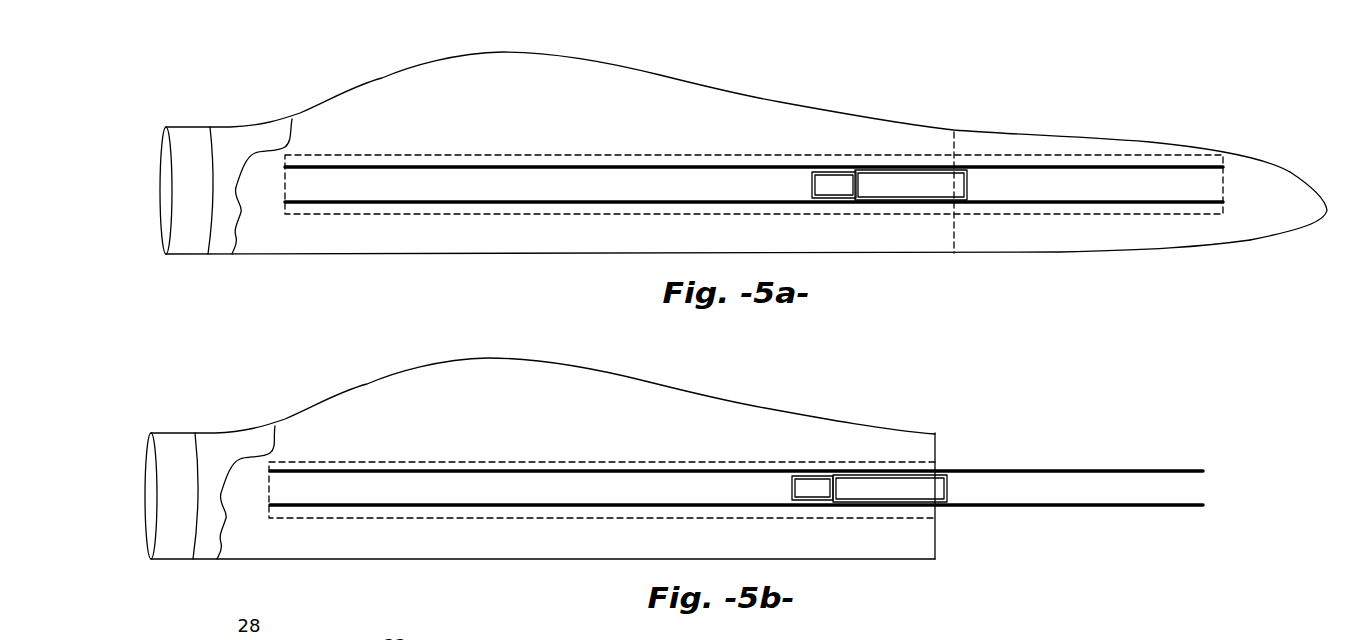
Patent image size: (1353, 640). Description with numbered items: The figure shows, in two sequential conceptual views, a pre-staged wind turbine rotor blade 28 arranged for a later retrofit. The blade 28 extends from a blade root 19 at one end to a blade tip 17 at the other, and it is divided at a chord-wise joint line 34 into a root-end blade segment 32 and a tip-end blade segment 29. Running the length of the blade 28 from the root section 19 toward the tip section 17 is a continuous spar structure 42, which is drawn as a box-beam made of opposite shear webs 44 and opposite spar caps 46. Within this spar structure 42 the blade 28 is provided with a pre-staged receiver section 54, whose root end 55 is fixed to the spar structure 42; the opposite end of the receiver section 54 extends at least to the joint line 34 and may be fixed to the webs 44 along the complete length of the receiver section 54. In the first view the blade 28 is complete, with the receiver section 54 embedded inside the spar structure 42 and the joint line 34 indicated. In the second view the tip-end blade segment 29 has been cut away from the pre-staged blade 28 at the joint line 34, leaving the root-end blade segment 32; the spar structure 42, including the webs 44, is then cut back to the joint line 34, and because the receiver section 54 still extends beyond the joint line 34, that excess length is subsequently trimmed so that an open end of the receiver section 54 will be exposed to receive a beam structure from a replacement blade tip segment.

In FIG. 5A, the blade tip 17 is at (1293, 188).
In FIG. 5A, the blade root 19 is at (237, 140).
In FIG. 5B, the blade root 19 is at (222, 445).
In FIG. 5A, the rotor blade 28 is at (286, 69).
In FIG. 5B, the rotor blade 28 is at (273, 374).
In FIG. 5A, the tip-end blade segment 29 is at (1150, 253).
In FIG. 5A, the root-end blade segment 32 is at (382, 78).
In FIG. 5B, the root-end blade segment 32 is at (368, 385).
In FIG. 5B, the chord-wise joint line 34 is at (935, 545).
In FIG. 5A, the spar structure 42 is at (613, 145).
In FIG. 5B, the spar structure 42 is at (600, 452).
In FIG. 5A, the shear webs 44 is at (503, 167).
In FIG. 5B, the shear webs 44 is at (489, 471).
In FIG. 5A, the spar caps 46 is at (415, 155).
In FIG. 5B, the spar caps 46 is at (401, 462).
In FIG. 5A, the receiver section 54 is at (896, 178).
In FIG. 5B, the receiver section 54 is at (876, 483).
In FIG. 5A, the root end of receiver section 55 is at (840, 203).
In FIG. 5B, the root end of receiver section 55 is at (819, 507).